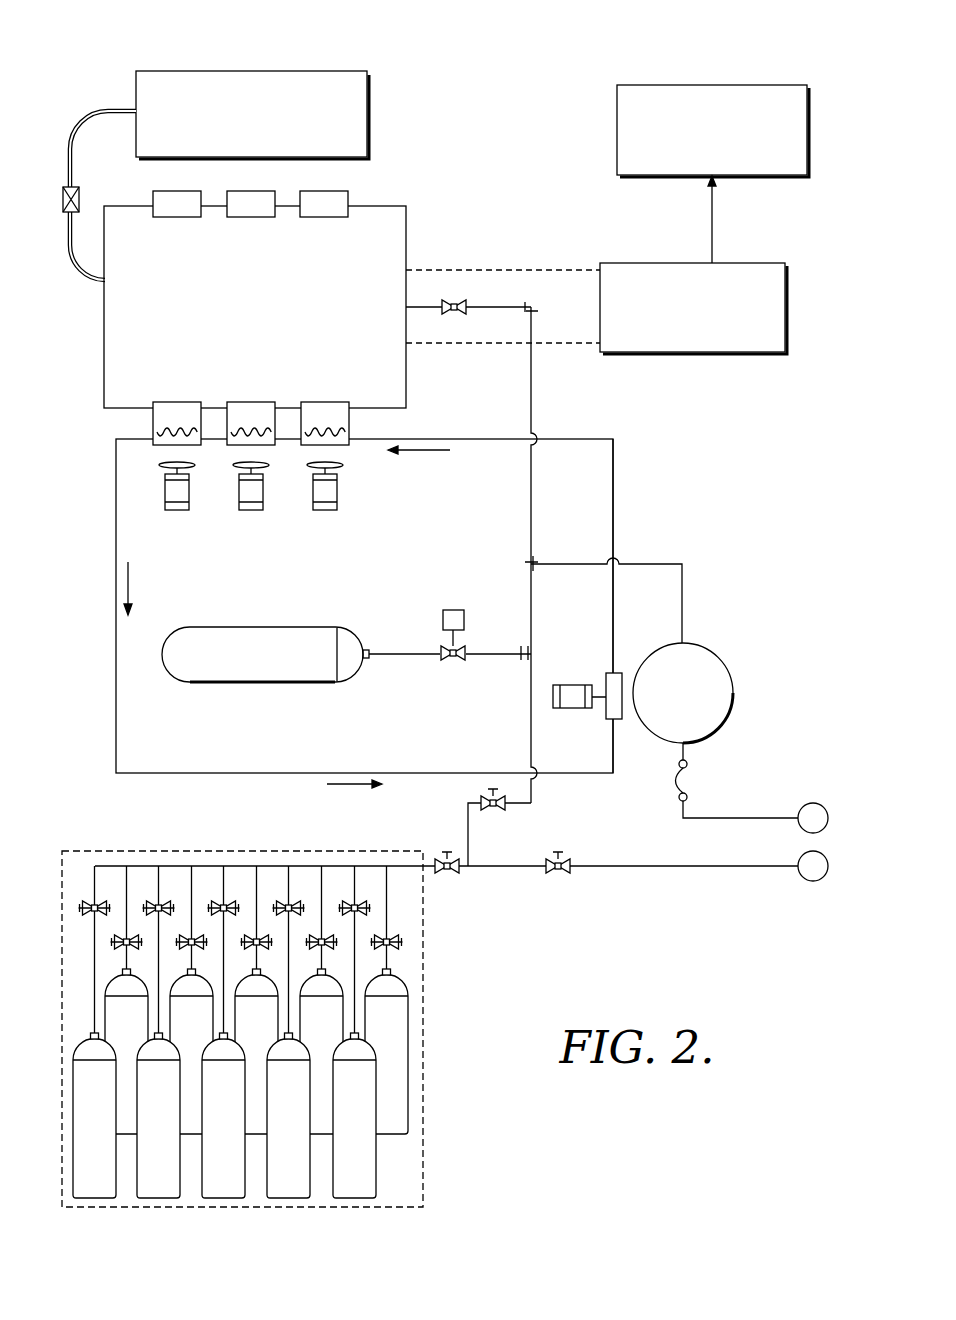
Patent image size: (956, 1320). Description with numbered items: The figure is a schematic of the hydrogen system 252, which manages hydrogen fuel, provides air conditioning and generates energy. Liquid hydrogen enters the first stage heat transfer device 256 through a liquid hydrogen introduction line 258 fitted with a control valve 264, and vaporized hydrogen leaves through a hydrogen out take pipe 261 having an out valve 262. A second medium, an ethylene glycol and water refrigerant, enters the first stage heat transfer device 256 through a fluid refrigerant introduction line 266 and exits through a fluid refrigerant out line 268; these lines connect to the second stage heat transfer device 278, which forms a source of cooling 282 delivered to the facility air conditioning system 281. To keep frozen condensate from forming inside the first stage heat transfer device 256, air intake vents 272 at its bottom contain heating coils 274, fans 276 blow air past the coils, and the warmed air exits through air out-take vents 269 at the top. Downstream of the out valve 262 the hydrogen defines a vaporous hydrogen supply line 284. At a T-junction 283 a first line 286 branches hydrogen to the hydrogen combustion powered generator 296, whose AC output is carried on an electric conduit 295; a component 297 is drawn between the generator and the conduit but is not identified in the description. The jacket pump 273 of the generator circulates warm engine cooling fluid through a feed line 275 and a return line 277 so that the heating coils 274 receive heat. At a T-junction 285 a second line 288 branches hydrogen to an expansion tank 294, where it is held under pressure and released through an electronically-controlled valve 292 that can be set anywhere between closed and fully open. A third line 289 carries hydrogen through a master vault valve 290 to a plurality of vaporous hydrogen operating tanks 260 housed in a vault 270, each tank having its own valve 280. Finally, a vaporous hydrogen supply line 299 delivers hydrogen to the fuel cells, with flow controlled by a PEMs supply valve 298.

The hydrogen system 252 is at (641, 57).
The first stage heat transfer device 256 is at (406, 230).
The liquid hydrogen introduction line 258 is at (93, 122).
The vaporous hydrogen operating tanks 260 is at (384, 1150).
The hydrogen out take pipe 261 is at (422, 306).
The out valve 262 is at (460, 313).
The control valve 264 is at (79, 197).
The fluid refrigerant introduction line 266 is at (467, 265).
The fluid refrigerant out line 268 is at (443, 346).
The air out-take vents 269 is at (253, 190).
The vault 270 is at (423, 940).
The air intake vents 272 is at (371, 421).
The jacket pump 273 is at (598, 714).
The heating coils 274 is at (253, 445).
The feed line 275 is at (578, 439).
The fans 276 is at (177, 510).
The return line 277 is at (116, 598).
The second stage heat transfer device 278 is at (715, 352).
The valve 280 is at (218, 897).
The facility air conditioning system 281 is at (617, 130).
The source of cooling 282 is at (713, 218).
The T-junction 283 is at (525, 562).
The vaporous hydrogen supply line 284 is at (531, 491).
The T-junction 285 is at (543, 652).
The first line 286 is at (650, 564).
The second line 288 is at (493, 652).
The third line 289 is at (503, 813).
The master vault valve 290 is at (452, 878).
The electronically-controlled valve 292 is at (455, 667).
The expansion tank 294 is at (280, 683).
The electric conduit 295 is at (740, 818).
The hydrogen combustion powered generator 296 is at (724, 662).
The switch 297 is at (667, 779).
The PEMs supply valve 298 is at (562, 880).
The vaporous hydrogen supply line 299 is at (685, 868).